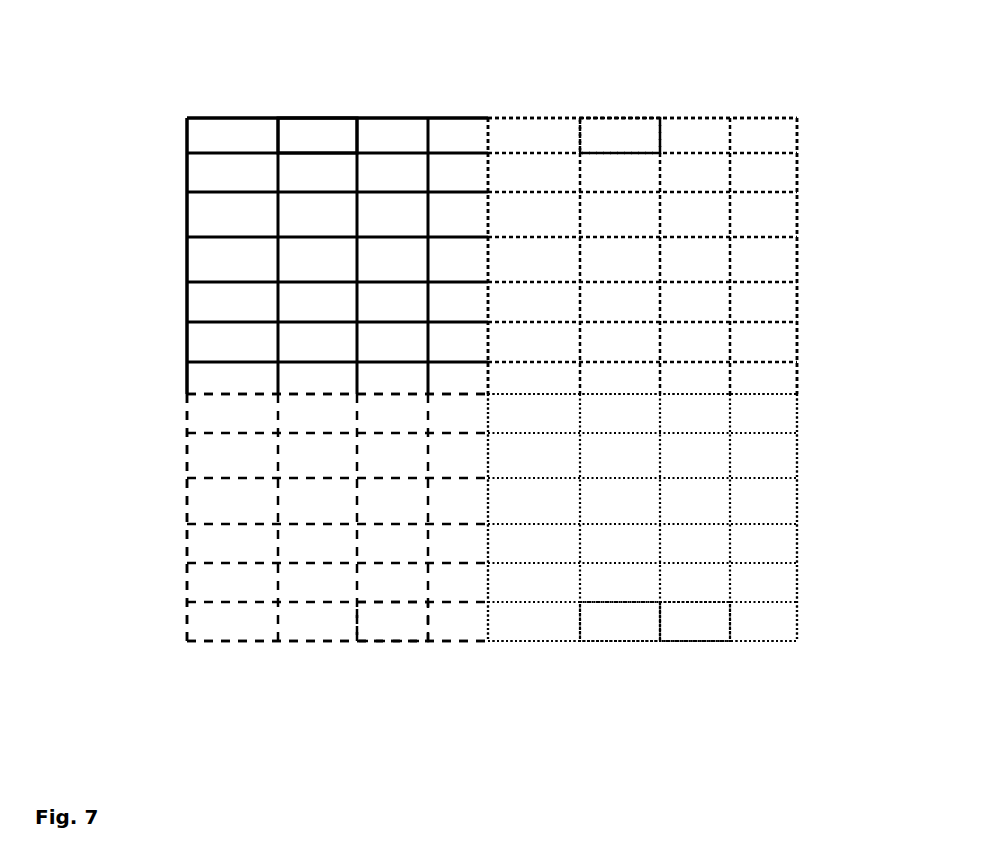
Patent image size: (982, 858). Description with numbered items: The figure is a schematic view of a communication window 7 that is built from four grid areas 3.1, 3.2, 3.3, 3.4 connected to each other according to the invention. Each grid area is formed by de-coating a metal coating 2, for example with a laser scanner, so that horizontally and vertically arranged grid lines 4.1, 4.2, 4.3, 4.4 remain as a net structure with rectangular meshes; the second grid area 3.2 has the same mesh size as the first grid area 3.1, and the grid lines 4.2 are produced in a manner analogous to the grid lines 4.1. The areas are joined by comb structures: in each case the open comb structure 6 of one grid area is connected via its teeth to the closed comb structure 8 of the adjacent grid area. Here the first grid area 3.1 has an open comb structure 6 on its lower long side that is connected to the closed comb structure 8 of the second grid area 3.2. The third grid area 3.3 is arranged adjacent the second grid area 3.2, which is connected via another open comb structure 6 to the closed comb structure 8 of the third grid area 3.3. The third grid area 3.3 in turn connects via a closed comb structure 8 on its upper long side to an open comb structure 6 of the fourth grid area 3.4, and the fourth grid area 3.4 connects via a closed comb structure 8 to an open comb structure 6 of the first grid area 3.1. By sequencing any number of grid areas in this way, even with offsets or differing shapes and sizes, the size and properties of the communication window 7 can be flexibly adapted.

The metal coating 2 is at (700, 621).
The first grid area 3.1 is at (233, 113).
The second grid area 3.2 is at (264, 646).
The third grid area 3.3 is at (641, 649).
The fourth grid area 3.4 is at (619, 113).
The grid lines 4.1 is at (307, 144).
The grid lines 4.2 is at (404, 606).
The grid lines 4.3 is at (596, 607).
The grid lines 4.4 is at (596, 147).
The open comb structure 6 is at (478, 127).
The communication window 7 is at (748, 100).
The closed comb structure 8 is at (503, 134).